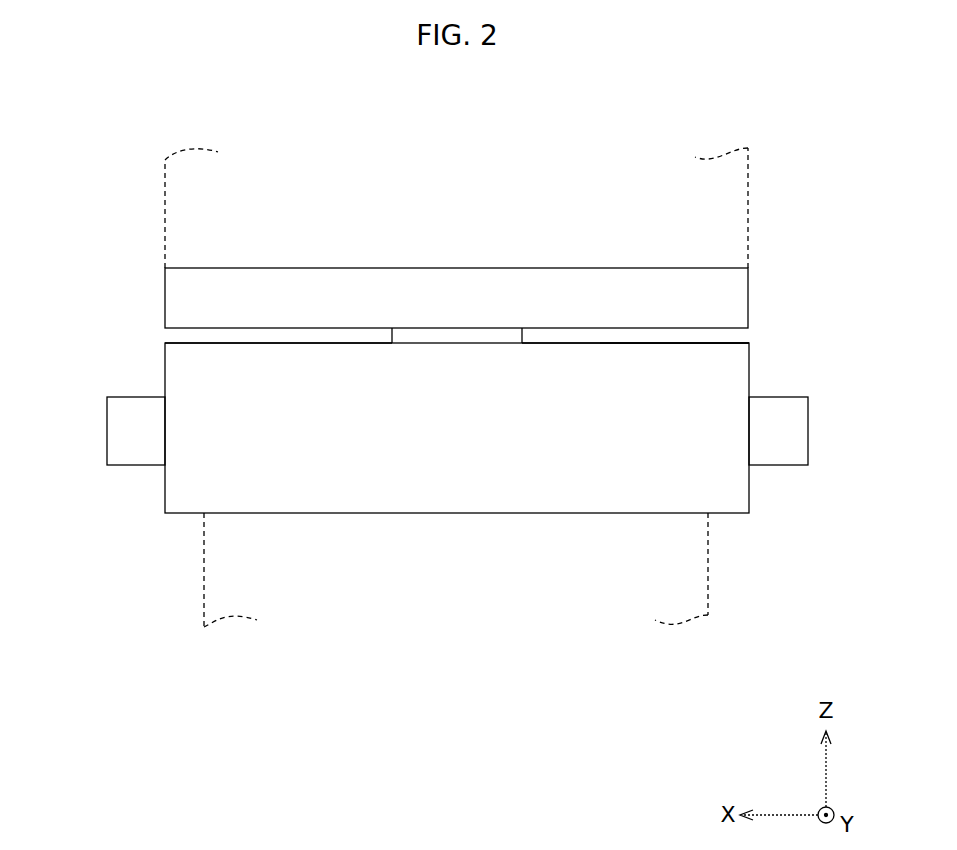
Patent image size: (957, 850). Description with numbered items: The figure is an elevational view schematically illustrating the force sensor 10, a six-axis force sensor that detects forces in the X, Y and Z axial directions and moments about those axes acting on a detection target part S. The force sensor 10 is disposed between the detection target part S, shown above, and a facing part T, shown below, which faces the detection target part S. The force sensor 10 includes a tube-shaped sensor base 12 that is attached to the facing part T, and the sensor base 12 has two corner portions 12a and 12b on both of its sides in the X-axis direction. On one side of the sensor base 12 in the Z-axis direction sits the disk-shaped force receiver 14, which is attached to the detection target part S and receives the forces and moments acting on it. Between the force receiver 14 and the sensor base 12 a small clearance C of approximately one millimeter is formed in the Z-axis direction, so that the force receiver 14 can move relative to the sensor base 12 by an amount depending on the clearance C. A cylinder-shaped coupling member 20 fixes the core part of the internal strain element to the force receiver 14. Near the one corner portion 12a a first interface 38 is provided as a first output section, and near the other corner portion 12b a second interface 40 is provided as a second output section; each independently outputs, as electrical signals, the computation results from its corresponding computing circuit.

The force sensor 10 is at (783, 138).
The detection target part S is at (748, 204).
The force receiver 14 is at (751, 296).
The clearance C is at (728, 337).
The coupling member 20 is at (458, 330).
The sensor base 12 is at (164, 491).
The corner portion 12a is at (728, 373).
The corner portion 12b is at (182, 370).
The second interface 40 is at (107, 423).
The first interface 38 is at (808, 432).
The facing part T is at (708, 573).